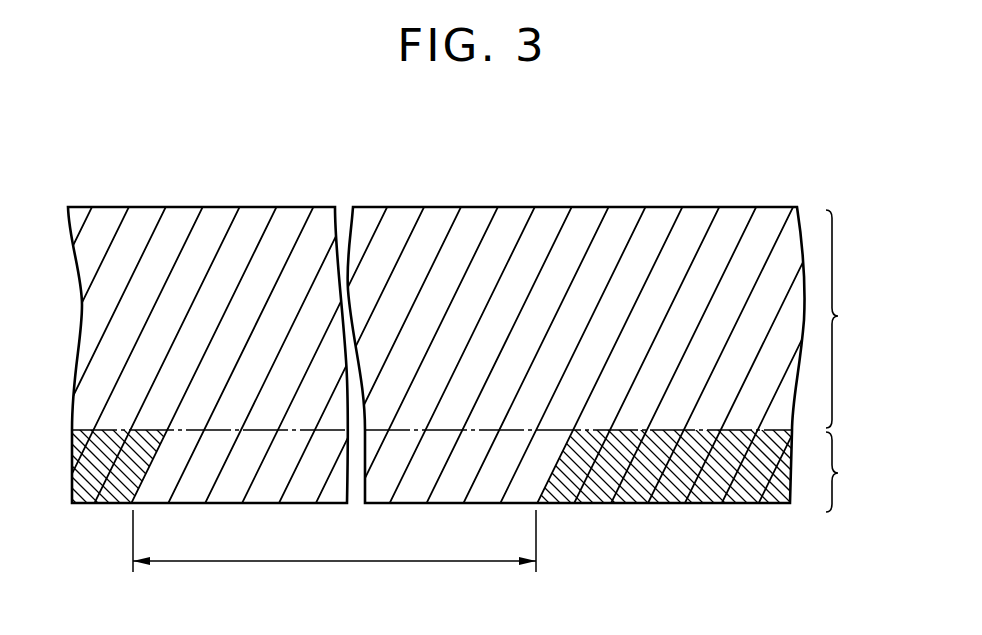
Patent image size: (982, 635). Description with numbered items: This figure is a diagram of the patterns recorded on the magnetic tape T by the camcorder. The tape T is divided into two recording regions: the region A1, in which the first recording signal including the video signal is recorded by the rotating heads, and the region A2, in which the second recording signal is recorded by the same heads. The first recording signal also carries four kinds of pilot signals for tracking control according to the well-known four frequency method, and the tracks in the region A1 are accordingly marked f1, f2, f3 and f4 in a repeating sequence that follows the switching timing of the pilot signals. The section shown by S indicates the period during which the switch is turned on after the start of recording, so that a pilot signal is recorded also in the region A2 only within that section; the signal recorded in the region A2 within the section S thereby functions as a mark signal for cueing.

The magnetic tape T is at (693, 207).
The region A1 is at (850, 319).
The region A2 is at (850, 472).
The section S is at (334, 541).
The track recorded with first pilot frequency f1 is at (457, 399).
The track recorded with second pilot frequency f2 is at (493, 399).
The track recorded with third pilot frequency f3 is at (397, 399).
The track recorded with fourth pilot frequency f4 is at (434, 399).